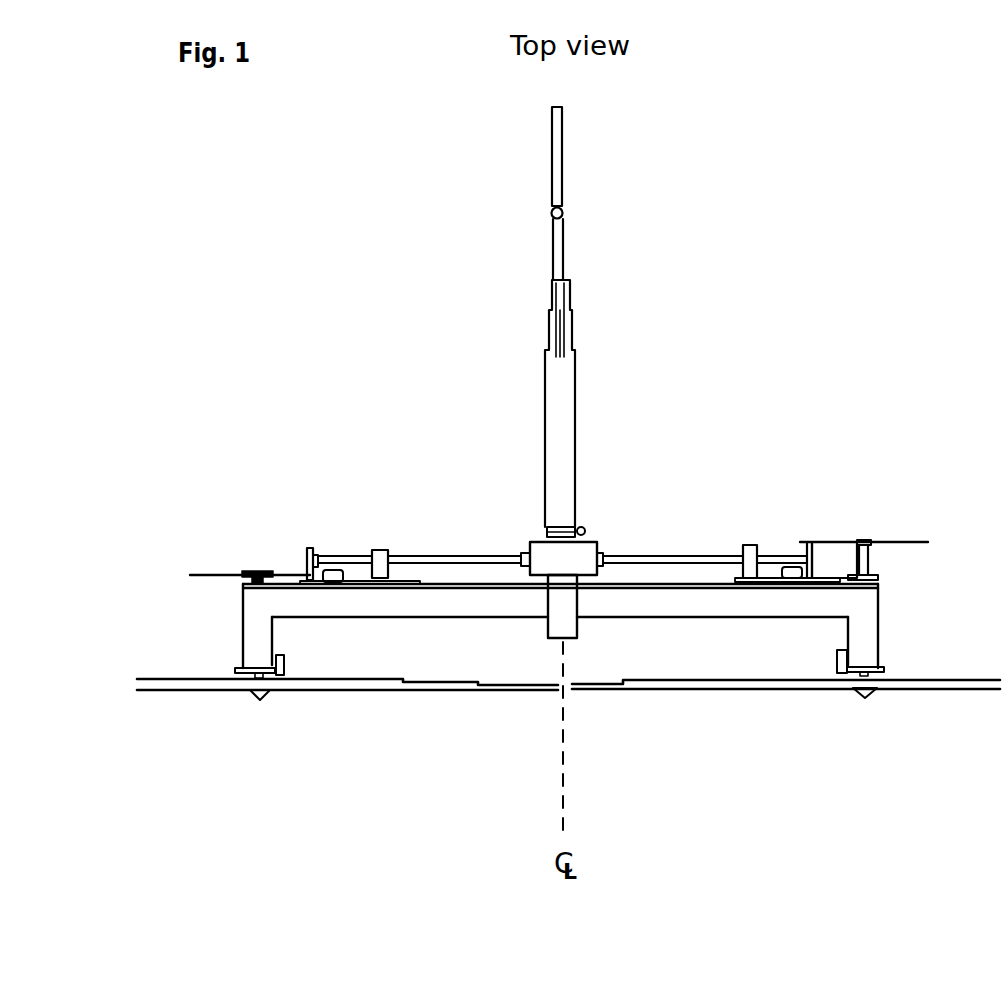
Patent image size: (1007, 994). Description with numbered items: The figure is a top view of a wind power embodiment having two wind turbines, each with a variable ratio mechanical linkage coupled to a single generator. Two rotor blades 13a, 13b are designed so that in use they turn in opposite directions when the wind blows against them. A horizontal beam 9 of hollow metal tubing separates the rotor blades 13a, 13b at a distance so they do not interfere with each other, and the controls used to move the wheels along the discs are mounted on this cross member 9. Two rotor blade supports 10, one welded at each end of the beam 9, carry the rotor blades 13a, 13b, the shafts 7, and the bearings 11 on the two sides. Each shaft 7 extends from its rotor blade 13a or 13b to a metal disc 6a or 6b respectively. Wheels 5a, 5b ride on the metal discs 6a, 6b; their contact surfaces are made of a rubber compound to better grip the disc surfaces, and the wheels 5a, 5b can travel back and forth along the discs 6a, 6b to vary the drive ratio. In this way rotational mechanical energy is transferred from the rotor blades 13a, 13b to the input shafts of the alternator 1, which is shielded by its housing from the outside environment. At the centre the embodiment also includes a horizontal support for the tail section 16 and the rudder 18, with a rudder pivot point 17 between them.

The alternator 1 is at (591, 540).
The wheel 5a is at (310, 549).
The wheel 5b is at (806, 555).
The metal disc 6a is at (232, 574).
The metal disc 6b is at (840, 543).
The shaft 7 is at (870, 563).
The horizontal beam 9 is at (410, 618).
The rotor blade support 10 is at (880, 622).
The bearing 11 is at (245, 668).
The rotor blade 13a is at (182, 690).
The rotor blade 13b is at (720, 690).
The tail section 16 is at (578, 397).
The rudder pivot point 17 is at (563, 213).
The rudder 18 is at (550, 150).